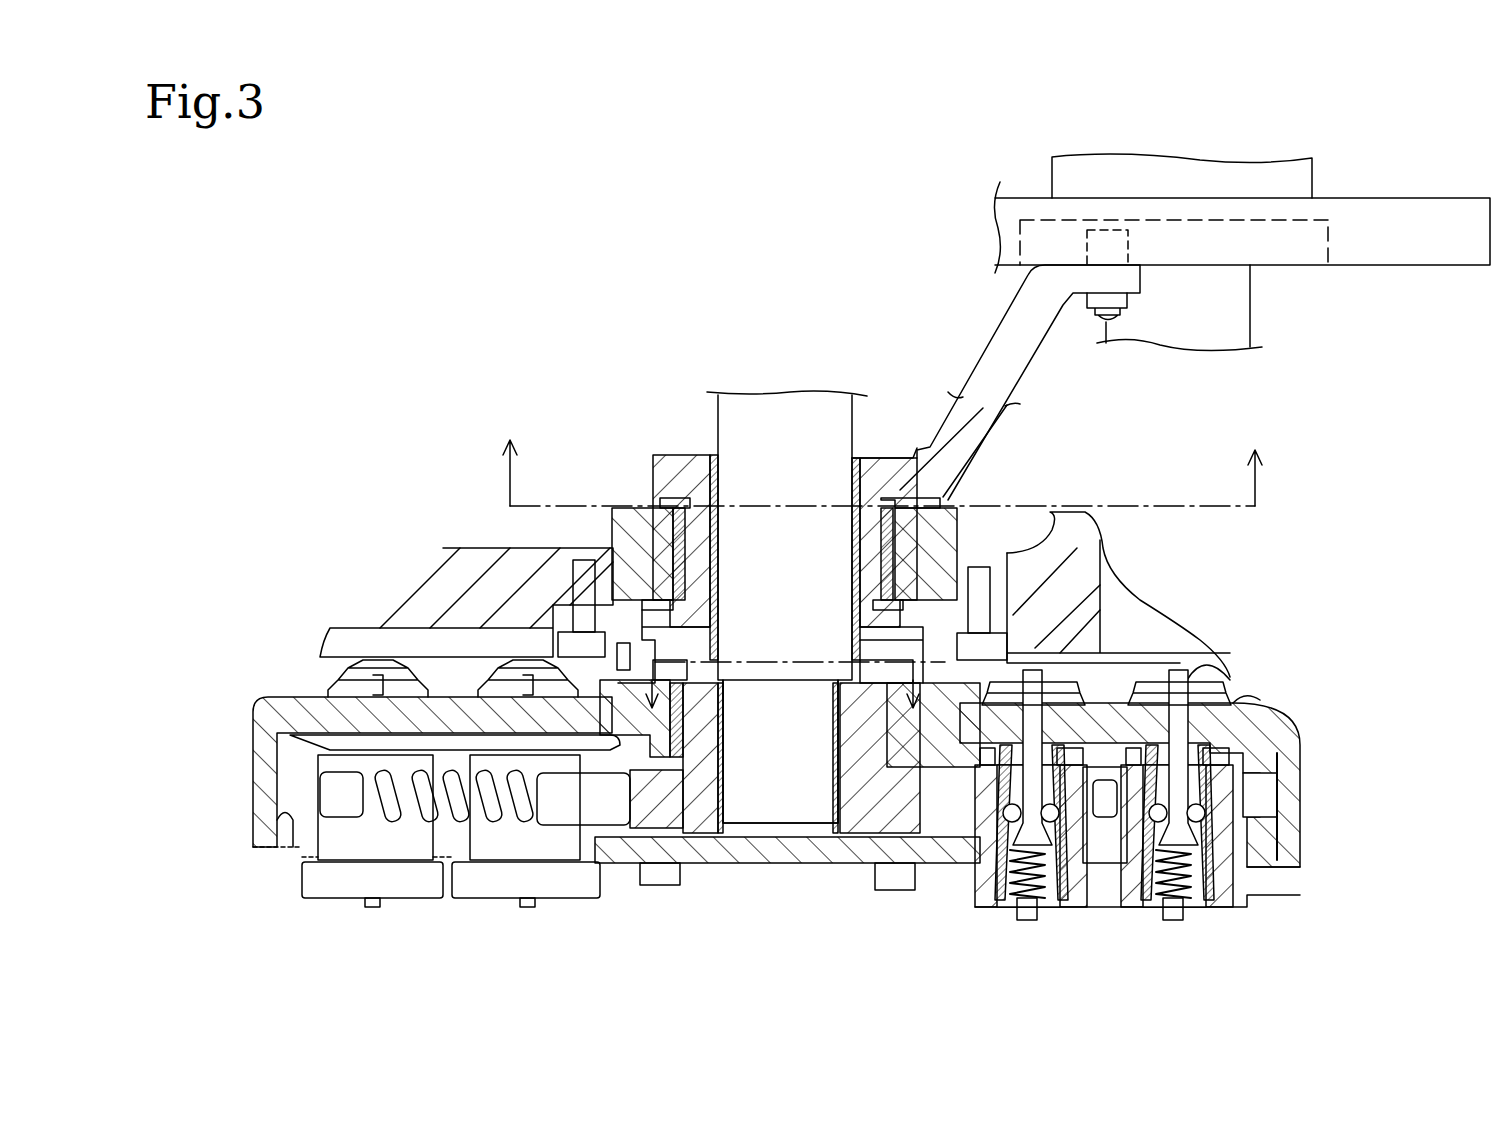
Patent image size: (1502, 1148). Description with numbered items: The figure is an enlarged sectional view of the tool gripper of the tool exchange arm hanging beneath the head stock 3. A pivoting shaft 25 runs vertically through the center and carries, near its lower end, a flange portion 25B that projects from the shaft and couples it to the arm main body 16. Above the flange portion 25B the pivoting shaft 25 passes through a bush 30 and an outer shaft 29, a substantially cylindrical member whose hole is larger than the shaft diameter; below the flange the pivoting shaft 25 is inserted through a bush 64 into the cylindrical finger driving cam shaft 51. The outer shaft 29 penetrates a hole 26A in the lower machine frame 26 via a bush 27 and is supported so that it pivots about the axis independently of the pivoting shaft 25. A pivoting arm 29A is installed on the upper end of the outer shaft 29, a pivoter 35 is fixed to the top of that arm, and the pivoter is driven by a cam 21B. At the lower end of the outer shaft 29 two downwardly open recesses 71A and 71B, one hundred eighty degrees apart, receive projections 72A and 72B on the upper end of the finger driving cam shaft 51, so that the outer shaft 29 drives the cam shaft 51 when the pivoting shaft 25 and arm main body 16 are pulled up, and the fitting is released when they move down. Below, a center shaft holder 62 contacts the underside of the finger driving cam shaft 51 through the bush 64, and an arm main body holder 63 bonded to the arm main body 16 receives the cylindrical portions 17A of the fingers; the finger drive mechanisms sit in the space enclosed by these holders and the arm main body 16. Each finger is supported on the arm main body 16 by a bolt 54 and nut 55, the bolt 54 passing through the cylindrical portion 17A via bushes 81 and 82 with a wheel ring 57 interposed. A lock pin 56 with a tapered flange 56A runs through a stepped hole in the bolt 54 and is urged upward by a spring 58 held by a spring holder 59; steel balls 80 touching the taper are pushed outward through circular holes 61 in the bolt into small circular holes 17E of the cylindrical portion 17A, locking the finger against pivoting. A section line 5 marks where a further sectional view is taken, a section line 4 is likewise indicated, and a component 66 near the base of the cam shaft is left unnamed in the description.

The head stock 3 is at (465, 548).
The section line 4 is at (884, 487).
The section line 5 is at (782, 667).
The arm main body 16 is at (265, 700).
The cylindrical portion 17A is at (1245, 905).
The small circular hole 17E is at (1300, 835).
The cam 21B is at (1432, 267).
The pivoting shaft 25 is at (775, 405).
The flange portion 25B is at (778, 680).
The lower machine frame 26 is at (612, 540).
The hole 26A is at (860, 458).
The bush 27 is at (950, 508).
The outer shaft 29 is at (655, 455).
The pivoting arm 29A is at (1025, 368).
The bush 30 is at (712, 455).
The pivoter 35 is at (1112, 234).
The finger driving cam shaft 51 is at (878, 820).
The bolt 54 is at (1210, 905).
The nut 55 is at (1230, 682).
The lock pin 56 is at (1200, 660).
The flange 56A is at (1270, 860).
The wheel ring 57 is at (1250, 700).
The spring 58 is at (1140, 905).
The spring holder 59 is at (1188, 915).
The circular hole 61 is at (1078, 905).
The center shaft holder 62 is at (640, 895).
The arm main body holder 63 is at (275, 850).
The bush 64 is at (730, 800).
The base plate 66 is at (815, 865).
The recess 71A is at (573, 590).
The recess 71B is at (1027, 607).
The projection 72A is at (558, 645).
The projection 72B is at (1000, 633).
The steel ball 80 is at (1290, 790).
The bush 81 is at (1270, 780).
The bush 82 is at (1238, 905).